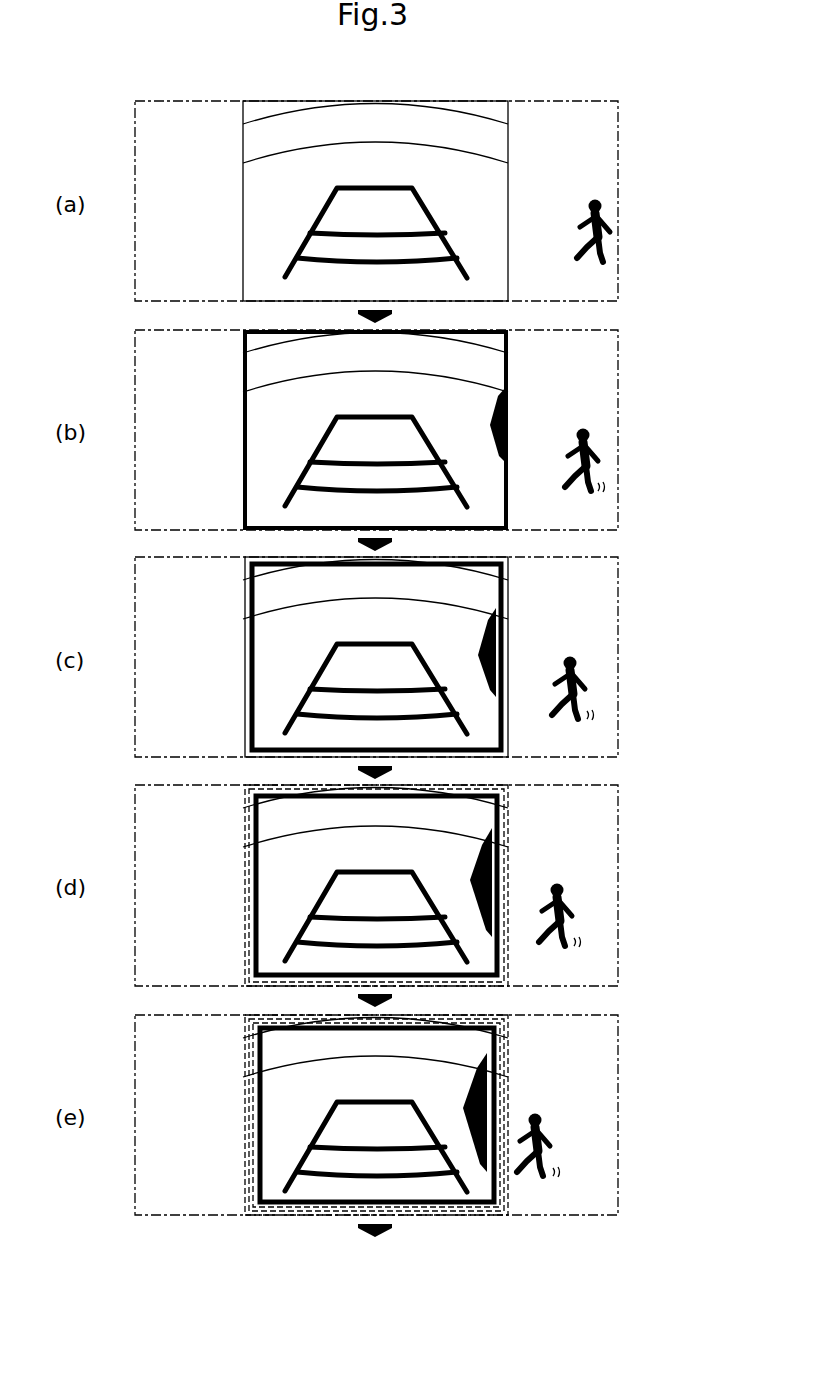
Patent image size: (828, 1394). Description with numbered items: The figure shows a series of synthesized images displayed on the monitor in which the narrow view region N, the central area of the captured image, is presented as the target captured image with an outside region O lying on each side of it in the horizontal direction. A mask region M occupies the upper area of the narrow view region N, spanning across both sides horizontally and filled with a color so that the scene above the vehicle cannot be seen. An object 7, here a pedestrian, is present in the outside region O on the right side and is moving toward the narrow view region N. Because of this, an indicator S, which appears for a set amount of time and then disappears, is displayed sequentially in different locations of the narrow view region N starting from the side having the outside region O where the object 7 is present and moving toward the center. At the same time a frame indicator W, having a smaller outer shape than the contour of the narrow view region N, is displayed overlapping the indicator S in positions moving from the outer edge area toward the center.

The outside region O is at (178, 122).
The mask region M is at (487, 110).
The narrow view region N is at (270, 228).
The object 7 is at (580, 250).
The frame indicator W is at (243, 458).
The indicator S is at (495, 412).